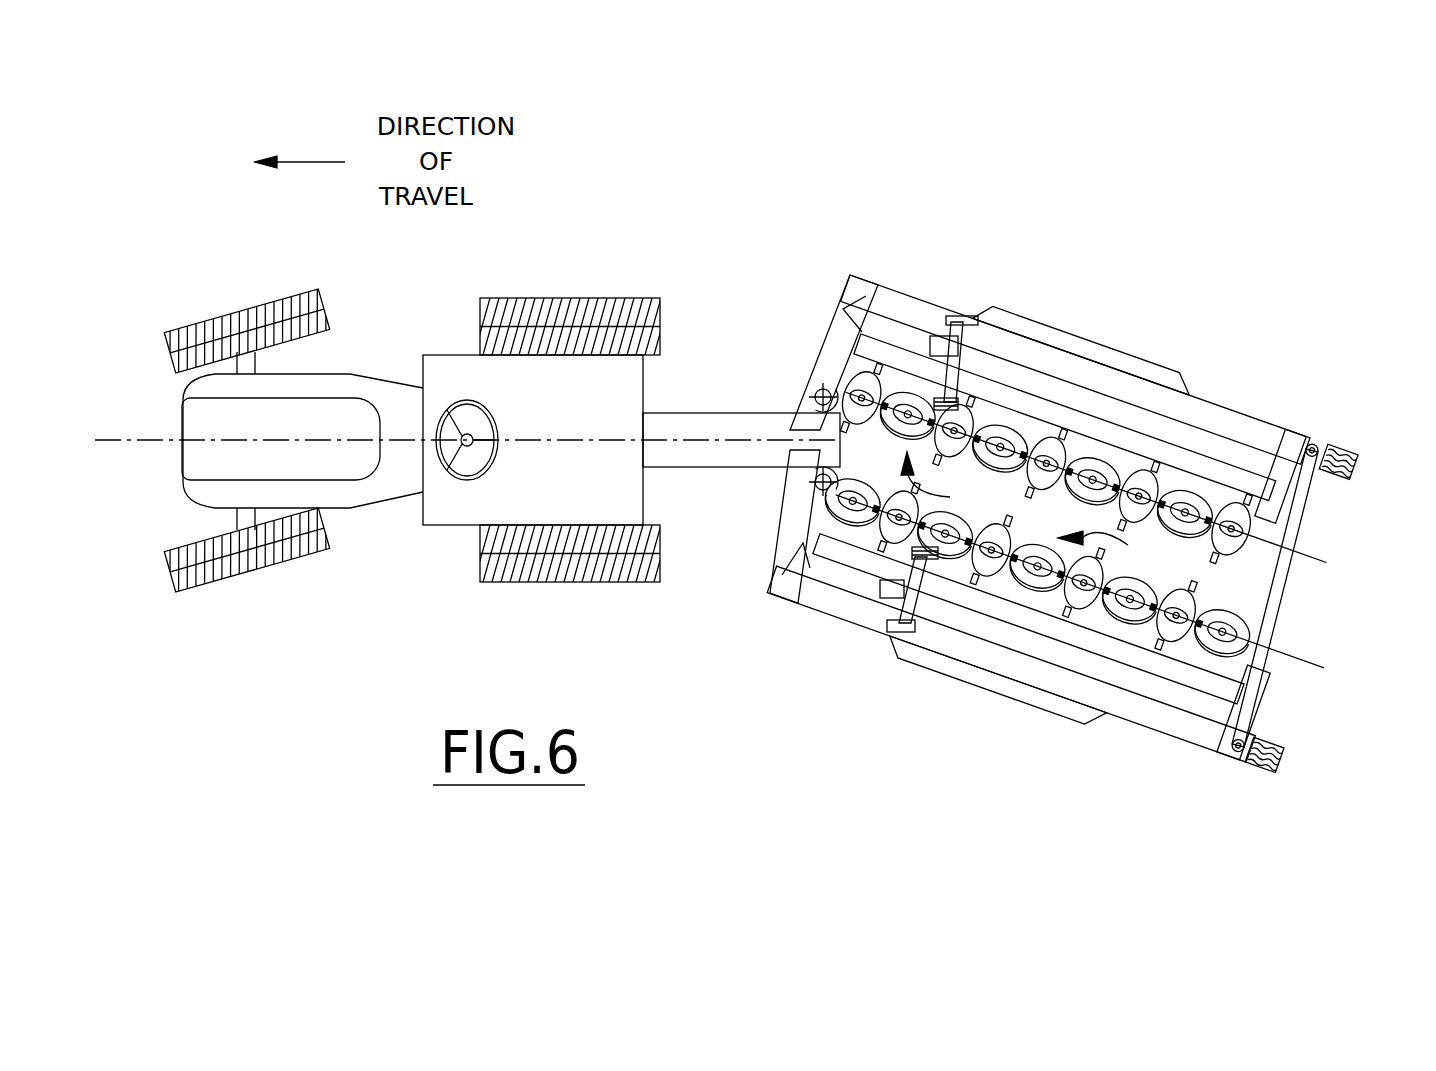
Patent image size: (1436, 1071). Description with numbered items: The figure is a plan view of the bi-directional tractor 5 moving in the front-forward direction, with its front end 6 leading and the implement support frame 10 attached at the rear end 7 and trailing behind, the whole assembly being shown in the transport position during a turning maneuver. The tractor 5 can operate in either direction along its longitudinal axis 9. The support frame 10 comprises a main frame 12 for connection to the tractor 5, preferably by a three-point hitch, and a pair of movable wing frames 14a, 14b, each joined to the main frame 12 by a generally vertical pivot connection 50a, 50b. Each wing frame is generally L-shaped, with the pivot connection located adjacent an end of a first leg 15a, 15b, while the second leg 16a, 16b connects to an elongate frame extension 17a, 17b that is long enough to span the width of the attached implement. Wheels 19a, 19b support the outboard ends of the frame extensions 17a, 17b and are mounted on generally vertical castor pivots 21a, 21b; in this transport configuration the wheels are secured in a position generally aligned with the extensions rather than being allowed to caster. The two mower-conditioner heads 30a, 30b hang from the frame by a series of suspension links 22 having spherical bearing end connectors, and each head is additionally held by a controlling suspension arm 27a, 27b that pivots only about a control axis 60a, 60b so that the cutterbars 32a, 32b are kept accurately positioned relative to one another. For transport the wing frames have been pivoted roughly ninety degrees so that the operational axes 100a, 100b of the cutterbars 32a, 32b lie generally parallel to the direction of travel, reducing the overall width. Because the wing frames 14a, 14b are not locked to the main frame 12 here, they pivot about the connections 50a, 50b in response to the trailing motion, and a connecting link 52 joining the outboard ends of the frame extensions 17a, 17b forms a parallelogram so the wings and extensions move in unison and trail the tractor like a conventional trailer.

The tractor 5 is at (412, 596).
The front end 6 is at (180, 405).
The rear end 7 is at (658, 492).
The longitudinal axis 9 is at (165, 442).
The implement support frame 10 is at (826, 218).
The main frame 12 is at (755, 410).
The wing frame 14a is at (775, 258).
The wing frame 14b is at (735, 627).
The first leg 15a is at (840, 355).
The first leg 15b is at (1140, 720).
The second leg 16a is at (905, 305).
The second leg 16b is at (830, 605).
The frame extension 17a is at (1210, 410).
The frame extension 17b is at (1140, 720).
The wheel 19a is at (1347, 476).
The wheel 19b is at (1268, 770).
The castor pivot 21a is at (1316, 445).
The castor pivot 21b is at (1238, 748).
The suspension links 22 is at (1290, 455).
The controlling suspension arm 27a is at (978, 350).
The controlling suspension arm 27b is at (898, 602).
The mower-conditioner head 30a is at (1140, 232).
The mower-conditioner head 30b is at (942, 715).
The cutterbar 32a is at (958, 482).
The cutterbar 32b is at (1119, 548).
The pivot connection 50a is at (818, 385).
The pivot connection 50b is at (812, 488).
The connecting link 52 is at (1283, 598).
The control axis 60a is at (1005, 352).
The control axis 60b is at (935, 650).
The operational axis 100a is at (1325, 557).
The operational axis 100b is at (1325, 665).